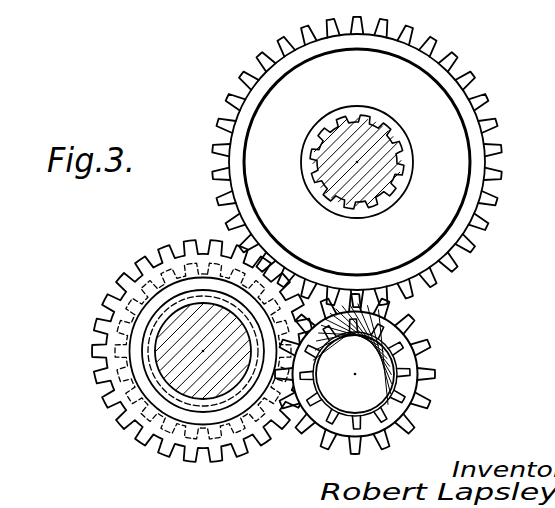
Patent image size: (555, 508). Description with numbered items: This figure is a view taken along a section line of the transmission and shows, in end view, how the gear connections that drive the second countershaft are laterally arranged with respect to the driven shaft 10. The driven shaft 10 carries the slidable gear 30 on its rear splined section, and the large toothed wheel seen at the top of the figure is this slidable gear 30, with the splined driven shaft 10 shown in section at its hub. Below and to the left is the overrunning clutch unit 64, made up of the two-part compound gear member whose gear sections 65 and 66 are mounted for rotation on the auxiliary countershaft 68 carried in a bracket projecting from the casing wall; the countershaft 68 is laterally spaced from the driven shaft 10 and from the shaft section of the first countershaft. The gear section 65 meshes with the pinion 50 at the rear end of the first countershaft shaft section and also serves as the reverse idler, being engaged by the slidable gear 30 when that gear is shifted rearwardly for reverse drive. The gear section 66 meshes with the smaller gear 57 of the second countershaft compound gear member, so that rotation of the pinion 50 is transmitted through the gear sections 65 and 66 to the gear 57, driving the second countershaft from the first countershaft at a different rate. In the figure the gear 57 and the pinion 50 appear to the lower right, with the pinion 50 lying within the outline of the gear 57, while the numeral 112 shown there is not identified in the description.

The driven shaft 10 is at (349, 124).
The slidable gear 30 is at (465, 209).
The overrunning clutch unit 64 is at (191, 369).
The gear section 65 is at (232, 457).
The gear section 66 is at (205, 435).
The auxiliary countershaft 68 is at (177, 381).
The shaft 112 is at (373, 357).
The gear section 57 is at (416, 362).
The pinion 50 is at (391, 400).